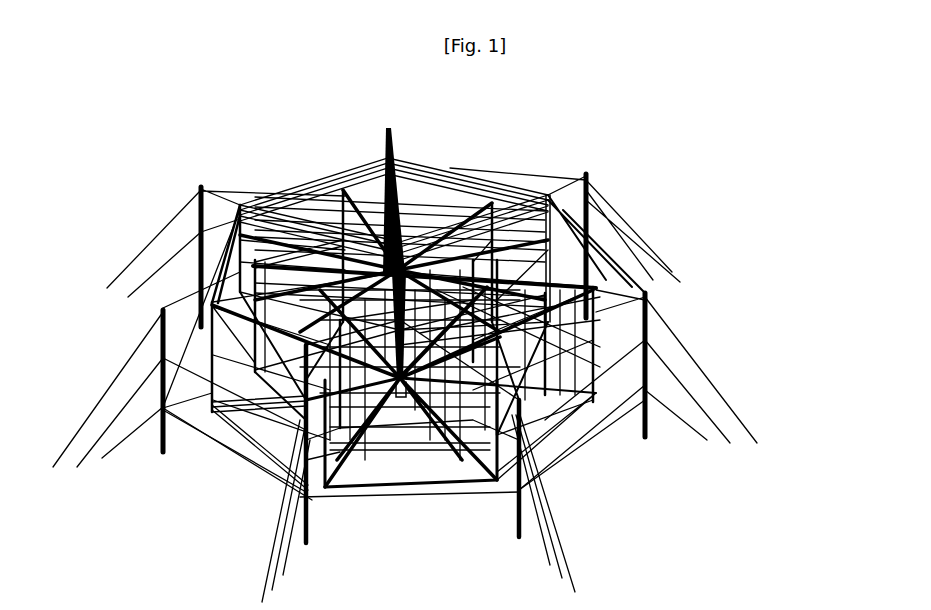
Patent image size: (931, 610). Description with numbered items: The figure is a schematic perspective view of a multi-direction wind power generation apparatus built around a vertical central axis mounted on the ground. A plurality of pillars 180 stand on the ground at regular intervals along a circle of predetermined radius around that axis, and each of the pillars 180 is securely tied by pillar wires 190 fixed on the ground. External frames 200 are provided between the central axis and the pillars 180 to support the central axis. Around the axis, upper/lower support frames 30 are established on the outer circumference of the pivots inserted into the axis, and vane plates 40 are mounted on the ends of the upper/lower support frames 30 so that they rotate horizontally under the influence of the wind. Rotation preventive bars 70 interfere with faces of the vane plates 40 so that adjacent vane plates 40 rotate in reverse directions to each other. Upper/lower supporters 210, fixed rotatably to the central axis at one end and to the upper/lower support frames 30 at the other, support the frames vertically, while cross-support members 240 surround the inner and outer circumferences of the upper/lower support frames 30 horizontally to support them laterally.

The upper/lower support frames 30 is at (515, 215).
The vane plates 40 is at (647, 295).
The rotation preventive bars 70 is at (542, 252).
The pillars 180 is at (587, 188).
The pillar wires 190 is at (720, 393).
The external frames 200 is at (220, 192).
The upper/lower supporters 210 is at (307, 215).
The cross-support members 240 is at (270, 446).